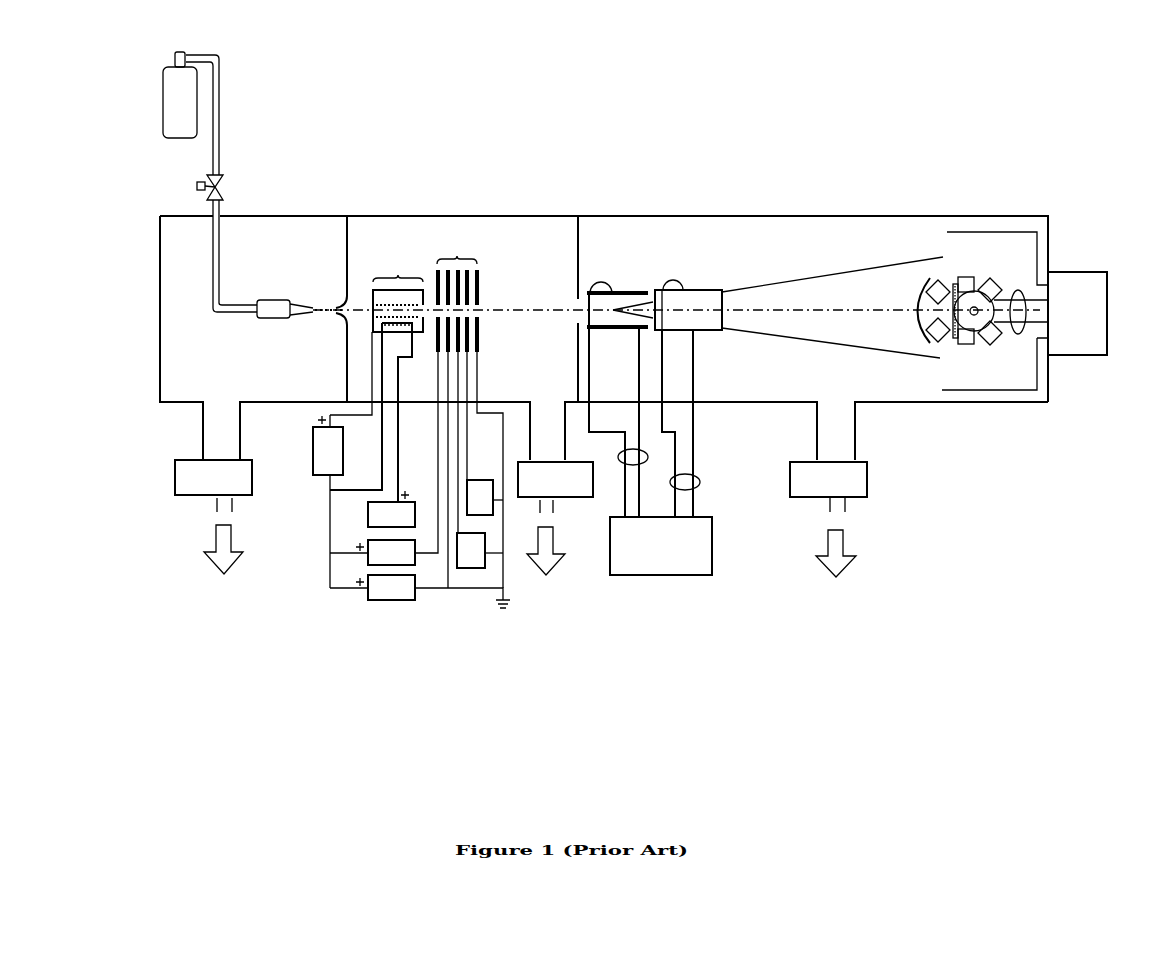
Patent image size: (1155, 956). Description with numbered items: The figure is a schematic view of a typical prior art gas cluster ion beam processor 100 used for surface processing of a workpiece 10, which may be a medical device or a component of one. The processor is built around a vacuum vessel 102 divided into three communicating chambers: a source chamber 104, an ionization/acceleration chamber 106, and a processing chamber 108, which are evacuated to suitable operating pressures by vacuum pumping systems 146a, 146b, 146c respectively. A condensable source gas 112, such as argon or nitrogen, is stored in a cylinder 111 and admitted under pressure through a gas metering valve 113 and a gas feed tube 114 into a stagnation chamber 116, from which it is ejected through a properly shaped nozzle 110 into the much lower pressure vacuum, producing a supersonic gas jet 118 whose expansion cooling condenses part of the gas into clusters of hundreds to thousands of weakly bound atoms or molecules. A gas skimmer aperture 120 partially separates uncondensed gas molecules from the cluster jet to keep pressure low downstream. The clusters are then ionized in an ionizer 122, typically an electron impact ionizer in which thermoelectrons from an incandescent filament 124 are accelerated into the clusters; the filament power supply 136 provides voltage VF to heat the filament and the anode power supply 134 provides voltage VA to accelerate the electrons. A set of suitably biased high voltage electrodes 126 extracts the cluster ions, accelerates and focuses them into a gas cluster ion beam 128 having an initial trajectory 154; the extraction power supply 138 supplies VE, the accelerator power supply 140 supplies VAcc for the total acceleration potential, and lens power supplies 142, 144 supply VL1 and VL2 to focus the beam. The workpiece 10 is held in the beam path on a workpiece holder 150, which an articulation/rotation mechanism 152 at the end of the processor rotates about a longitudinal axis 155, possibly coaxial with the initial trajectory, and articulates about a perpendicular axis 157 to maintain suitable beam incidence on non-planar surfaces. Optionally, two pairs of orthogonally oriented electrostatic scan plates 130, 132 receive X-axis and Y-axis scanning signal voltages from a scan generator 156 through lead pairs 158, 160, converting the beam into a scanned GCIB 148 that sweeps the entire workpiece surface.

The gas cluster ion beam processor 100 is at (957, 636).
The vacuum vessel 102 is at (788, 215).
The source chamber 104 is at (177, 275).
The ionization/acceleration chamber 106 is at (478, 235).
The processing chamber 108 is at (840, 235).
The workpiece 10 is at (947, 290).
The nozzle 110 is at (303, 318).
The cylinder 111 is at (200, 82).
The condensable source gas 112 is at (177, 93).
The gas metering valve 113 is at (200, 180).
The gas feed tube 114 is at (223, 212).
The stagnation chamber 116 is at (272, 318).
The supersonic gas jet 118 is at (320, 322).
The gas skimmer aperture 120 is at (340, 299).
The ionizer 122 is at (398, 272).
The incandescent filament 124 is at (372, 323).
The high voltage electrodes 126 is at (458, 256).
The gas cluster ion beam 128 is at (488, 306).
The electrostatic scan plates 130 is at (625, 287).
The electrostatic scan plates 132 is at (703, 283).
The anode power supply 134 is at (313, 455).
The filament power supply 136 is at (368, 515).
The extraction power supply 138 is at (362, 555).
The accelerator power supply 140 is at (390, 603).
The lens power supply 142 is at (468, 569).
The lens power supply 144 is at (487, 523).
The vacuum pumping system 146a is at (213, 517).
The vacuum pumping system 146b is at (555, 518).
The vacuum pumping system 146c is at (828, 519).
The scanned GCIB 148 is at (903, 299).
The workpiece holder 150 is at (975, 275).
The articulation/rotation mechanism 152 is at (1078, 357).
The initial trajectory 154 is at (552, 308).
The longitudinal axis 155 is at (1037, 308).
The scan generator 156 is at (661, 544).
The articulation axis 157 is at (978, 316).
The lead pair 158 is at (648, 455).
The lead pair 160 is at (700, 484).